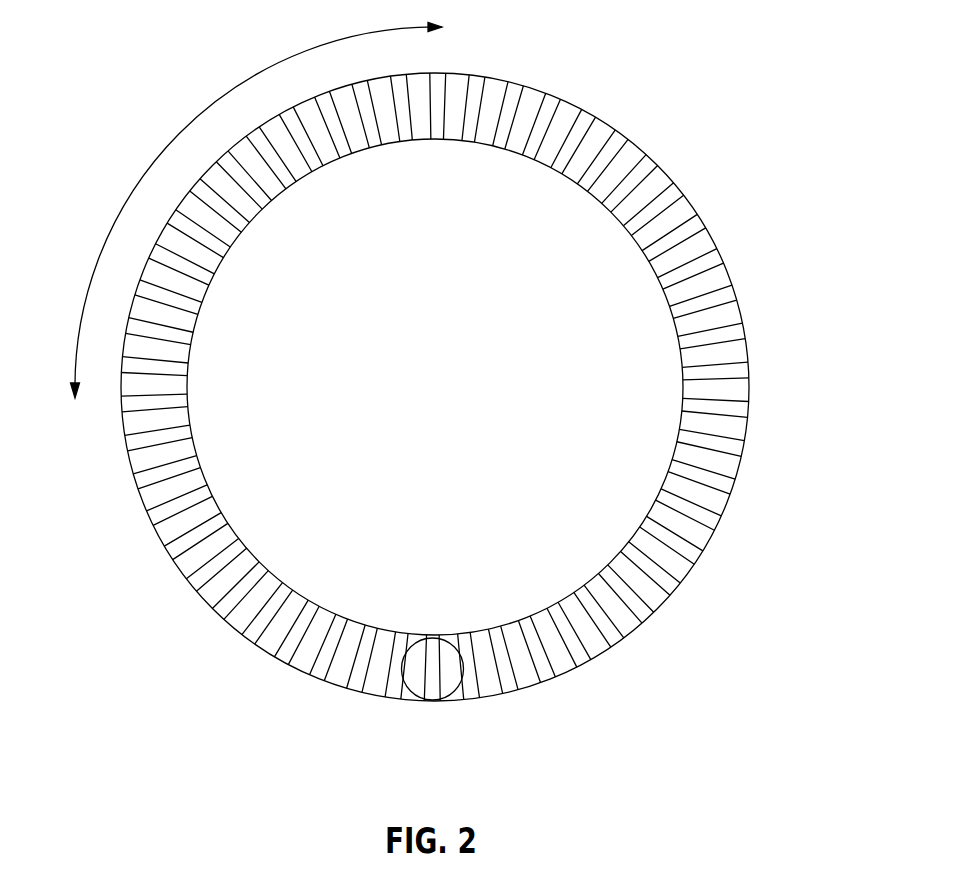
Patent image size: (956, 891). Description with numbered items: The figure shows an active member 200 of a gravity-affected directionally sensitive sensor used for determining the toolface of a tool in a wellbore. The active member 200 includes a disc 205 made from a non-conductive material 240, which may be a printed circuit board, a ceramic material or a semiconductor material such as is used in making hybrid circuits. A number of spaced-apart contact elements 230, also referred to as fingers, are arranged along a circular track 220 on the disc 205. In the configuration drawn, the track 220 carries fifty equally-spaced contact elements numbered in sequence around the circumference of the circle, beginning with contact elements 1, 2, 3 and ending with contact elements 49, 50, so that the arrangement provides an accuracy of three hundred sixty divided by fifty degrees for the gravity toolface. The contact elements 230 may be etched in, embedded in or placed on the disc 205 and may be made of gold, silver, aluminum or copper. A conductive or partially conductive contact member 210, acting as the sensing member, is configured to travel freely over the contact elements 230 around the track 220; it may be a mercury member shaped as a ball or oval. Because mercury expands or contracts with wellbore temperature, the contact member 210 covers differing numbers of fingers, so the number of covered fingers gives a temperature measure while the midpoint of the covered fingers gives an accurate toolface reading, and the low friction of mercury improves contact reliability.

The active member 200 is at (612, 46).
The disc 205 is at (470, 388).
The contact member 210 is at (445, 710).
The track 220 is at (637, 146).
The contact elements 230 is at (320, 680).
The non-conductive material 240 is at (632, 275).
The contact element number 1 is at (432, 684).
The contact element number 2 is at (431, 681).
The contact element number 3 is at (434, 674).
The contact element number 49 is at (425, 676).
The contact element number 50 is at (428, 682).